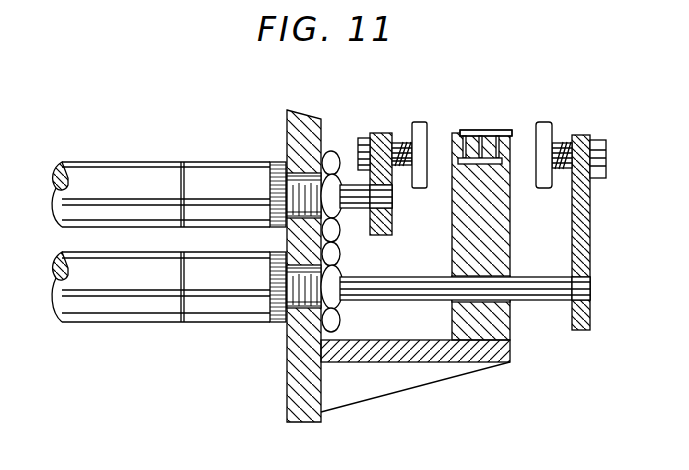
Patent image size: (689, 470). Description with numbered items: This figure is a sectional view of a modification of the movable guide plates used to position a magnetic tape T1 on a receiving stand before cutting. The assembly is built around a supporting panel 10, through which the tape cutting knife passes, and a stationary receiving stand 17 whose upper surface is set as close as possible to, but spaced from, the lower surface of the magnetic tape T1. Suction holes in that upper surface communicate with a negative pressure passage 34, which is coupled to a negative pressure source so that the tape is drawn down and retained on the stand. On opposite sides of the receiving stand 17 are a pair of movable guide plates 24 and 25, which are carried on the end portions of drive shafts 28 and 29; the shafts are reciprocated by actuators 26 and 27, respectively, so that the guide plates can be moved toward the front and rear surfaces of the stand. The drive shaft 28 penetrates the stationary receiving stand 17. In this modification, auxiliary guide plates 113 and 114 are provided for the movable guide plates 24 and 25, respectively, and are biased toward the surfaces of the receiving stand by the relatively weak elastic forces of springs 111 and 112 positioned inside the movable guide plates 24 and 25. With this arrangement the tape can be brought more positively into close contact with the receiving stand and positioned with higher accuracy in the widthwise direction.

The supporting panel 10 is at (290, 377).
The actuator 27 is at (144, 170).
The actuator 26 is at (130, 325).
The drive shaft 29 is at (357, 206).
The drive shaft 28 is at (535, 299).
The movable guide plate 25 is at (392, 219).
The spring 112 is at (400, 136).
The auxiliary guide plate 114 is at (416, 122).
The stationary receiving stand 17 is at (500, 244).
The negative pressure passage 34 is at (497, 168).
The magnetic tape T1 is at (476, 130).
The movable guide plate 24 is at (588, 227).
The spring 111 is at (560, 142).
The auxiliary guide plate 113 is at (545, 124).